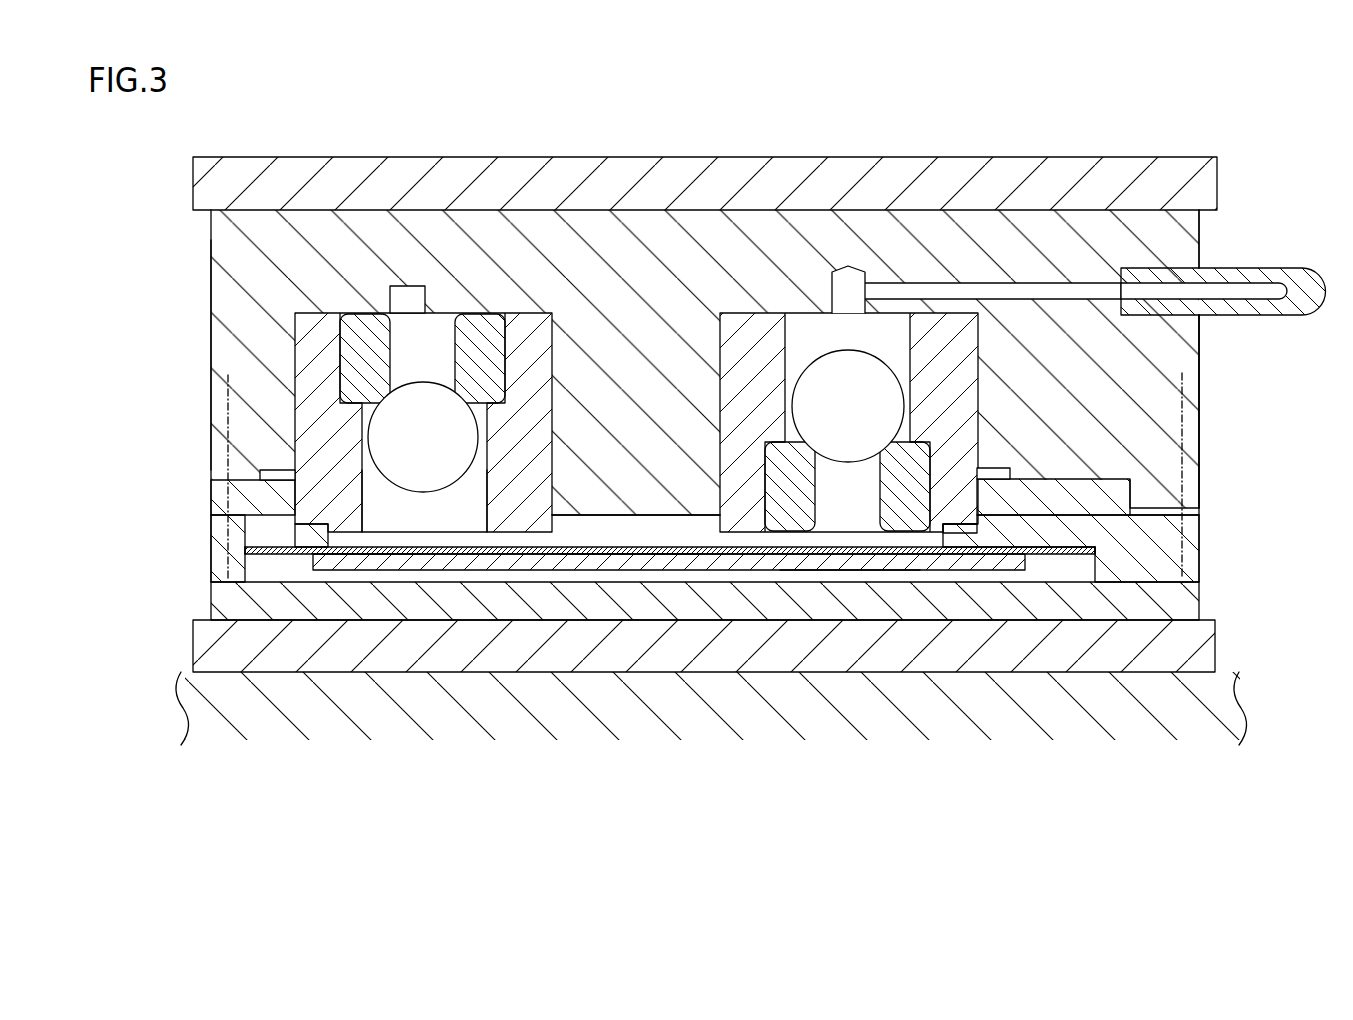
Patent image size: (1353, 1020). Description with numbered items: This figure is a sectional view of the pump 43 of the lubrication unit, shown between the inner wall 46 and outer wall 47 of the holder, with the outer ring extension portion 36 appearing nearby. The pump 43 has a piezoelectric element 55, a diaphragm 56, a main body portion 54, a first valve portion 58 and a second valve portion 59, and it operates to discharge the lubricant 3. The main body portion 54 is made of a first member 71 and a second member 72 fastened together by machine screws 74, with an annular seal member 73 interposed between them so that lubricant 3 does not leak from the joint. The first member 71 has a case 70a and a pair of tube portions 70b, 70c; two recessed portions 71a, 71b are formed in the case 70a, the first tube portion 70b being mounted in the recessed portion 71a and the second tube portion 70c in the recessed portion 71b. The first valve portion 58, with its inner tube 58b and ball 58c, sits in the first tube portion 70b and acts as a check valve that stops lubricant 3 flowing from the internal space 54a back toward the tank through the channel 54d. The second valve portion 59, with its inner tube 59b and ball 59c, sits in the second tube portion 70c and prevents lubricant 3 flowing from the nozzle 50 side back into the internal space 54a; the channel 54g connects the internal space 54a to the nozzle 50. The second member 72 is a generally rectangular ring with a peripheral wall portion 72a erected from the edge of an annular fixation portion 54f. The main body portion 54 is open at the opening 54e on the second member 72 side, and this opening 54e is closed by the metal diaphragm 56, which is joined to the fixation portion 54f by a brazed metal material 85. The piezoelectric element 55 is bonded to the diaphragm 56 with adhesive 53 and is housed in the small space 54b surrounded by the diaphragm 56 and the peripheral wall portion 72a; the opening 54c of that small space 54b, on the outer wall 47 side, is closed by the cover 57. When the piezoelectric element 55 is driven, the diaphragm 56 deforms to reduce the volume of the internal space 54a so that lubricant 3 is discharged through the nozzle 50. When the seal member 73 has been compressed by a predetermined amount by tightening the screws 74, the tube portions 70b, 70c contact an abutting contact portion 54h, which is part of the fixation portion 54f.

The lubricant 3 is at (606, 524).
The outer ring extension portion 36 is at (510, 702).
The pump 43 is at (1203, 398).
The inner wall 46 is at (1174, 193).
The outer wall 47 is at (1195, 652).
The nozzle 50 is at (1272, 273).
The adhesive 53 is at (982, 558).
The main body portion 54 is at (485, 206).
The internal space 54a is at (703, 520).
The small space 54b is at (849, 574).
The opening 54c is at (1088, 548).
The channel 54d is at (413, 300).
The opening 54e is at (360, 558).
The fixation portion 54f is at (296, 527).
The channel 54g is at (993, 298).
The abutting contact portion 54h is at (280, 467).
The piezoelectric element 55 is at (628, 572).
The diaphragm 56 is at (587, 551).
The cover 57 is at (230, 600).
The first valve portion 58 is at (377, 300).
The inner tube 58b is at (372, 335).
The ball 58c is at (383, 437).
The second valve portion 59 is at (849, 309).
The inner tube 59b is at (790, 477).
The ball 59c is at (882, 407).
The case 70a is at (207, 285).
The first tube portion 70b is at (308, 363).
The second tube portion 70c is at (743, 397).
The first member 71 is at (222, 350).
The recessed portion 71a is at (386, 506).
The recessed portion 71b is at (818, 332).
The second member 72 is at (222, 557).
The peripheral wall portion 72a is at (1153, 557).
The seal member 73 is at (222, 498).
The machine screws 74 is at (228, 412).
The metal material 85 is at (252, 551).